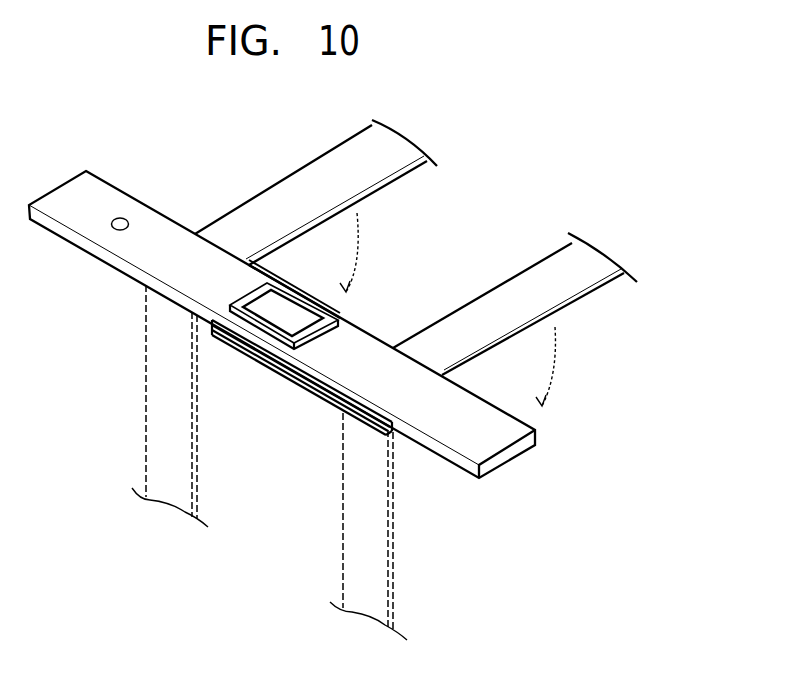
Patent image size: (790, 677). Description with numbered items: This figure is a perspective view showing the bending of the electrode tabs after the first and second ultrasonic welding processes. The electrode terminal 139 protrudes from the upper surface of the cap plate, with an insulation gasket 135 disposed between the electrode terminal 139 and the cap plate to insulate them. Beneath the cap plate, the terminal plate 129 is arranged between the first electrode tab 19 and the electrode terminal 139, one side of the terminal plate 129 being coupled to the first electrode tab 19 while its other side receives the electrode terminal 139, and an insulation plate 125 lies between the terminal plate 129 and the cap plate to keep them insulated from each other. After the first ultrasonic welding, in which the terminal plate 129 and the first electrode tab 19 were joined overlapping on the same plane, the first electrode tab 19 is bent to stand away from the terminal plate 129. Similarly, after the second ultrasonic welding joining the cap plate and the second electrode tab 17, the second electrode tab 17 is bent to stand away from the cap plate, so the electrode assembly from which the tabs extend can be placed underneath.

The second electrode tab 17 is at (293, 188).
The first electrode tab 19 is at (497, 298).
The insulation plate 125 is at (262, 362).
The terminal plate 129 is at (311, 390).
The insulation gasket 135 is at (345, 320).
The electrode terminal 139 is at (290, 307).